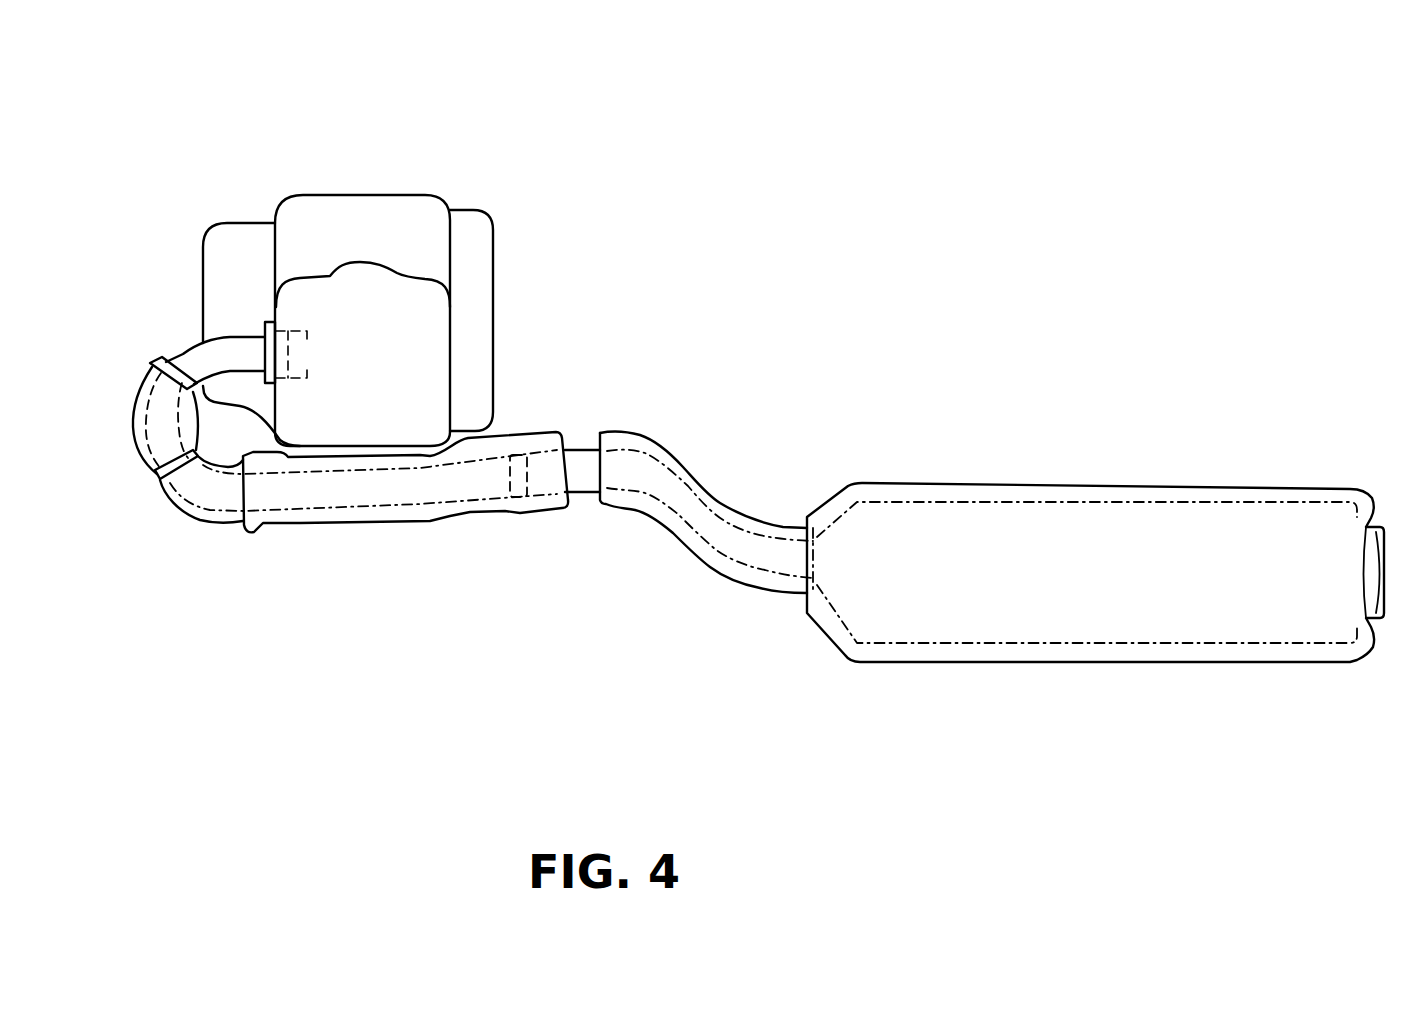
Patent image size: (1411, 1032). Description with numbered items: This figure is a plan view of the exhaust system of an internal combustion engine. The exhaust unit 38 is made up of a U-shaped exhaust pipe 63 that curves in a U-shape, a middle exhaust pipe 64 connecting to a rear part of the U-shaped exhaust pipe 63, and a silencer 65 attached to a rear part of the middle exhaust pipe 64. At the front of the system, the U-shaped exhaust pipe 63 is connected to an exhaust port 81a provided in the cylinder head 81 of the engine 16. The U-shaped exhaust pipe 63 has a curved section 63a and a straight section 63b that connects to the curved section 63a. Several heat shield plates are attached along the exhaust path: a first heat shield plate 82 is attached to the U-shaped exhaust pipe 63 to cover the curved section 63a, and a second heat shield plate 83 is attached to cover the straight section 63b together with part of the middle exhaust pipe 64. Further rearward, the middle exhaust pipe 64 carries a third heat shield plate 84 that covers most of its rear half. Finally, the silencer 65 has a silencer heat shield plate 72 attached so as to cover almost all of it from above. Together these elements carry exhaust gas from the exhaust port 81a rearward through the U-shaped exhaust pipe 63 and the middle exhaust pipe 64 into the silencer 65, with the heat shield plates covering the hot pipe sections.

The engine 16 is at (357, 193).
The cylinder head 81 is at (415, 272).
The exhaust port 81a is at (295, 330).
The exhaust unit 38 is at (785, 348).
The U-shaped exhaust pipe 63 is at (190, 343).
The curved section 63a is at (145, 428).
The straight section 63b is at (322, 508).
The first heat shield plate 82 is at (177, 508).
The second heat shield plate 83 is at (430, 520).
The middle exhaust pipe 64 is at (583, 493).
The third heat shield plate 84 is at (710, 568).
The silencer heat shield plate 72 is at (1144, 665).
The silencer 65 is at (972, 645).